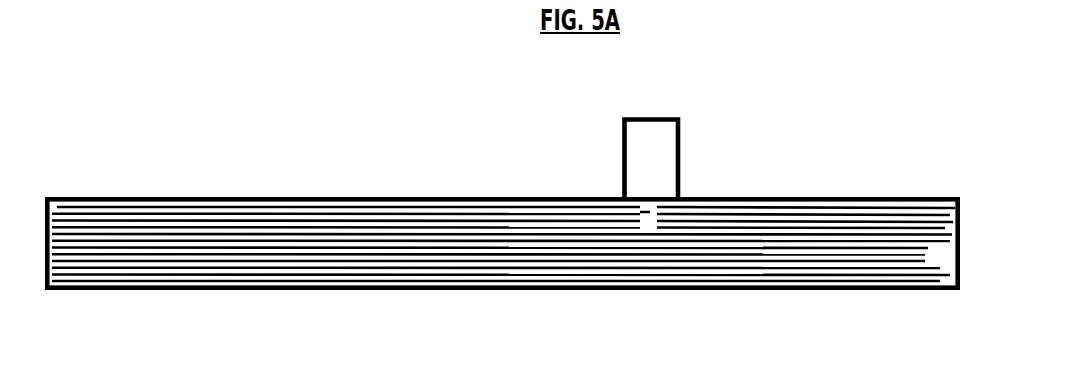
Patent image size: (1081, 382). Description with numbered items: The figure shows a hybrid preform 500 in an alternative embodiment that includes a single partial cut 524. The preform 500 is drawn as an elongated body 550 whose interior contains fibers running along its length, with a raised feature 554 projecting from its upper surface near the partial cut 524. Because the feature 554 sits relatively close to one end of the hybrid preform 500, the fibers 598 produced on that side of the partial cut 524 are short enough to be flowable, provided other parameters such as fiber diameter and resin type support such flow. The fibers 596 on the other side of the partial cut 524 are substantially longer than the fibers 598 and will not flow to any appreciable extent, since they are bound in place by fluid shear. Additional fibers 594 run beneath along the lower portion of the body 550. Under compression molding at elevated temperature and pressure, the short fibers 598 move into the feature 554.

The hybrid preform 500 is at (898, 180).
The light guide plate 550 is at (960, 233).
The feature 554 is at (665, 143).
The partial cut 524 is at (647, 217).
The lower light guiding layer 594 is at (484, 272).
The fibers 596 is at (363, 215).
The fibers 598 is at (770, 218).